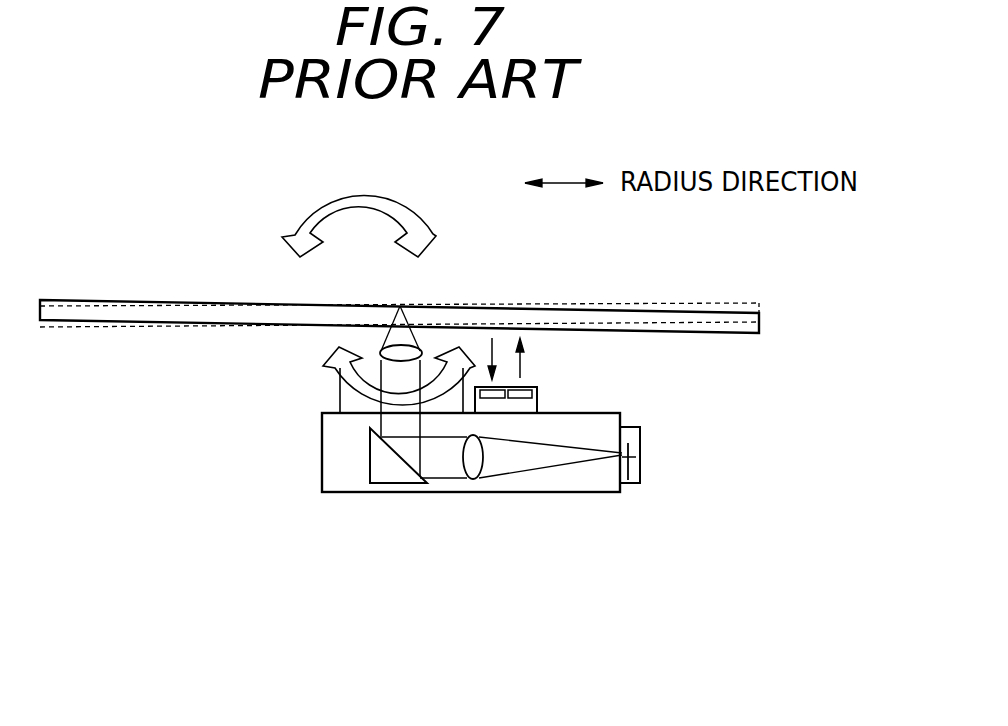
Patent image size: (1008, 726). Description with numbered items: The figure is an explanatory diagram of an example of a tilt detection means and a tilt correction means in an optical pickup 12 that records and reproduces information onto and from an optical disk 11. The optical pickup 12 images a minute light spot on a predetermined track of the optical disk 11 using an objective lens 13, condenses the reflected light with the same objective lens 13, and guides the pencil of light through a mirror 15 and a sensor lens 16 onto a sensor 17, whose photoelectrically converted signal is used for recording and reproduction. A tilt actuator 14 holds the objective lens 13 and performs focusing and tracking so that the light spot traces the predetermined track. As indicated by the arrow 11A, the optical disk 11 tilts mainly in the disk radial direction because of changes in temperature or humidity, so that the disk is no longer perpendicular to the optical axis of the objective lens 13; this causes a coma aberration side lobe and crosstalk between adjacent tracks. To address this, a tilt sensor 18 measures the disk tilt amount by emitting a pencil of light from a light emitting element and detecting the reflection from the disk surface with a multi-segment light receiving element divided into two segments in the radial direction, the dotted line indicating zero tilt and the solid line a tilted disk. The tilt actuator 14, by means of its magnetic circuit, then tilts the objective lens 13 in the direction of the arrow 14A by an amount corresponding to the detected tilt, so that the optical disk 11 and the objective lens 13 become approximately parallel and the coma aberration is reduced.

The optical disk 11 is at (270, 317).
The arrow 11A is at (312, 212).
The optical pickup 12 is at (335, 483).
The objective lens 13 is at (416, 352).
The tilt actuator 14 is at (340, 402).
The arrow 14A is at (323, 364).
The mirror 15 is at (399, 479).
The sensor lens 16 is at (477, 480).
The sensor 17 is at (627, 490).
The tilt sensor 18 is at (525, 405).